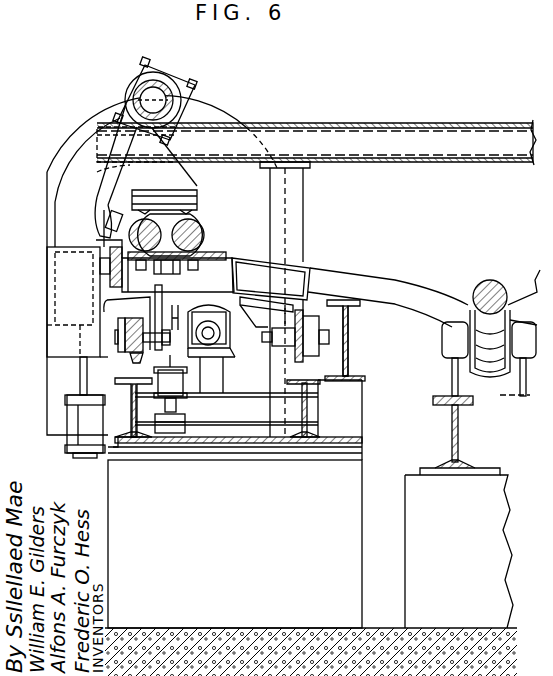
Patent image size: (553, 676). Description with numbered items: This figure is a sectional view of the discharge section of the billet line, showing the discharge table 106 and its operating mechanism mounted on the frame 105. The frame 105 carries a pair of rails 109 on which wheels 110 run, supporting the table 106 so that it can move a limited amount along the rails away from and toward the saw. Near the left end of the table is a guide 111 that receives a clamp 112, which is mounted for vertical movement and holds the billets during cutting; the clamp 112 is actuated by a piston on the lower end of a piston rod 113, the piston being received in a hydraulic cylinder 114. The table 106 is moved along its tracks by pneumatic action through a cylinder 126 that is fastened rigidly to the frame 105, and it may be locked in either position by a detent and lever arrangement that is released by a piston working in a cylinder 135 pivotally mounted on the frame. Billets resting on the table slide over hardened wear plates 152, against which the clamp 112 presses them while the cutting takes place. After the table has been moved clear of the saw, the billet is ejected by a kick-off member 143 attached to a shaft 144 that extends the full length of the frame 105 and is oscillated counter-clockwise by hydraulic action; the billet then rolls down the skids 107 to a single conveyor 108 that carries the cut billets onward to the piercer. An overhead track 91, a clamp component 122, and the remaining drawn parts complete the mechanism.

The overhead track beam 91 is at (223, 108).
The frame 105 is at (257, 412).
The discharge table 106 is at (218, 267).
The skids or rails 107 is at (398, 287).
The conveyor 108 is at (492, 370).
The rails 109 is at (132, 375).
The wheels 110 is at (133, 323).
The guide 111 is at (63, 296).
The clamp 112 is at (75, 162).
The piston rod 113 is at (78, 373).
The hydraulic cylinder 114 is at (73, 422).
The clamp 122 is at (100, 268).
The cylinder 126 is at (212, 314).
The cylinder 135 is at (180, 385).
The kick-off member 143 is at (118, 150).
The shaft 144 is at (163, 95).
The hardened wear plates 152 is at (183, 262).